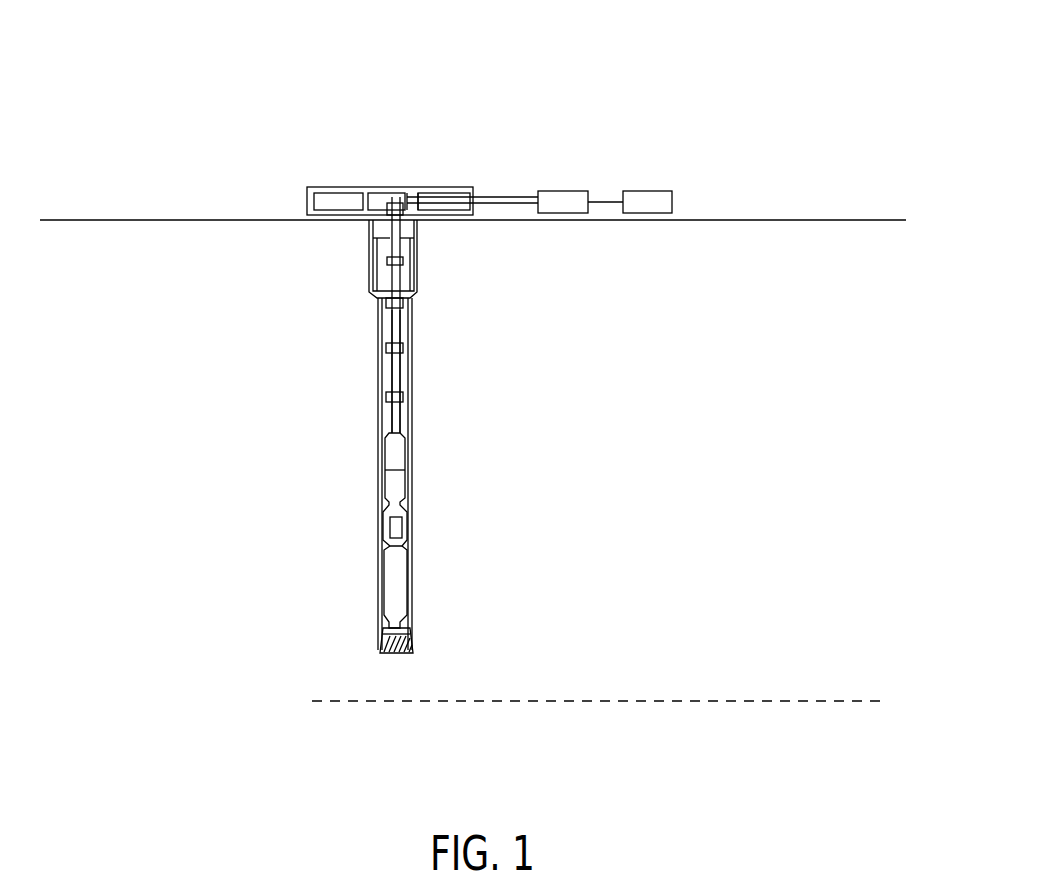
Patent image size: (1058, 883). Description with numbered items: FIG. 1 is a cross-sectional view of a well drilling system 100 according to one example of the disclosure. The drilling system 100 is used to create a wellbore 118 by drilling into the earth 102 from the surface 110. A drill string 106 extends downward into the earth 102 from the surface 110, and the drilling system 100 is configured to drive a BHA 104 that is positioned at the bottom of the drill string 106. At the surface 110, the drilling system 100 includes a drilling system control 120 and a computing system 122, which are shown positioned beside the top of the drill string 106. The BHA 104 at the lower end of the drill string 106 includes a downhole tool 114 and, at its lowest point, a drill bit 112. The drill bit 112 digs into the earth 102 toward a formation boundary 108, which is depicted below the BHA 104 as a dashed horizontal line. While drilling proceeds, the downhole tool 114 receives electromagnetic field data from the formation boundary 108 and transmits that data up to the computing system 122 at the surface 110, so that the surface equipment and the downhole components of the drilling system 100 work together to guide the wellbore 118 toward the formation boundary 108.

The drilling system 100 is at (770, 101).
The earth 102 is at (276, 536).
The BHA 104 is at (343, 467).
The drill string 106 is at (400, 375).
The formation boundary 108 is at (296, 708).
The surface 110 is at (143, 219).
The drill bit 112 is at (413, 640).
The downhole tool 114 is at (396, 595).
The wellbore 118 is at (380, 345).
The drilling system control 120 is at (558, 189).
The computing system 122 is at (650, 189).